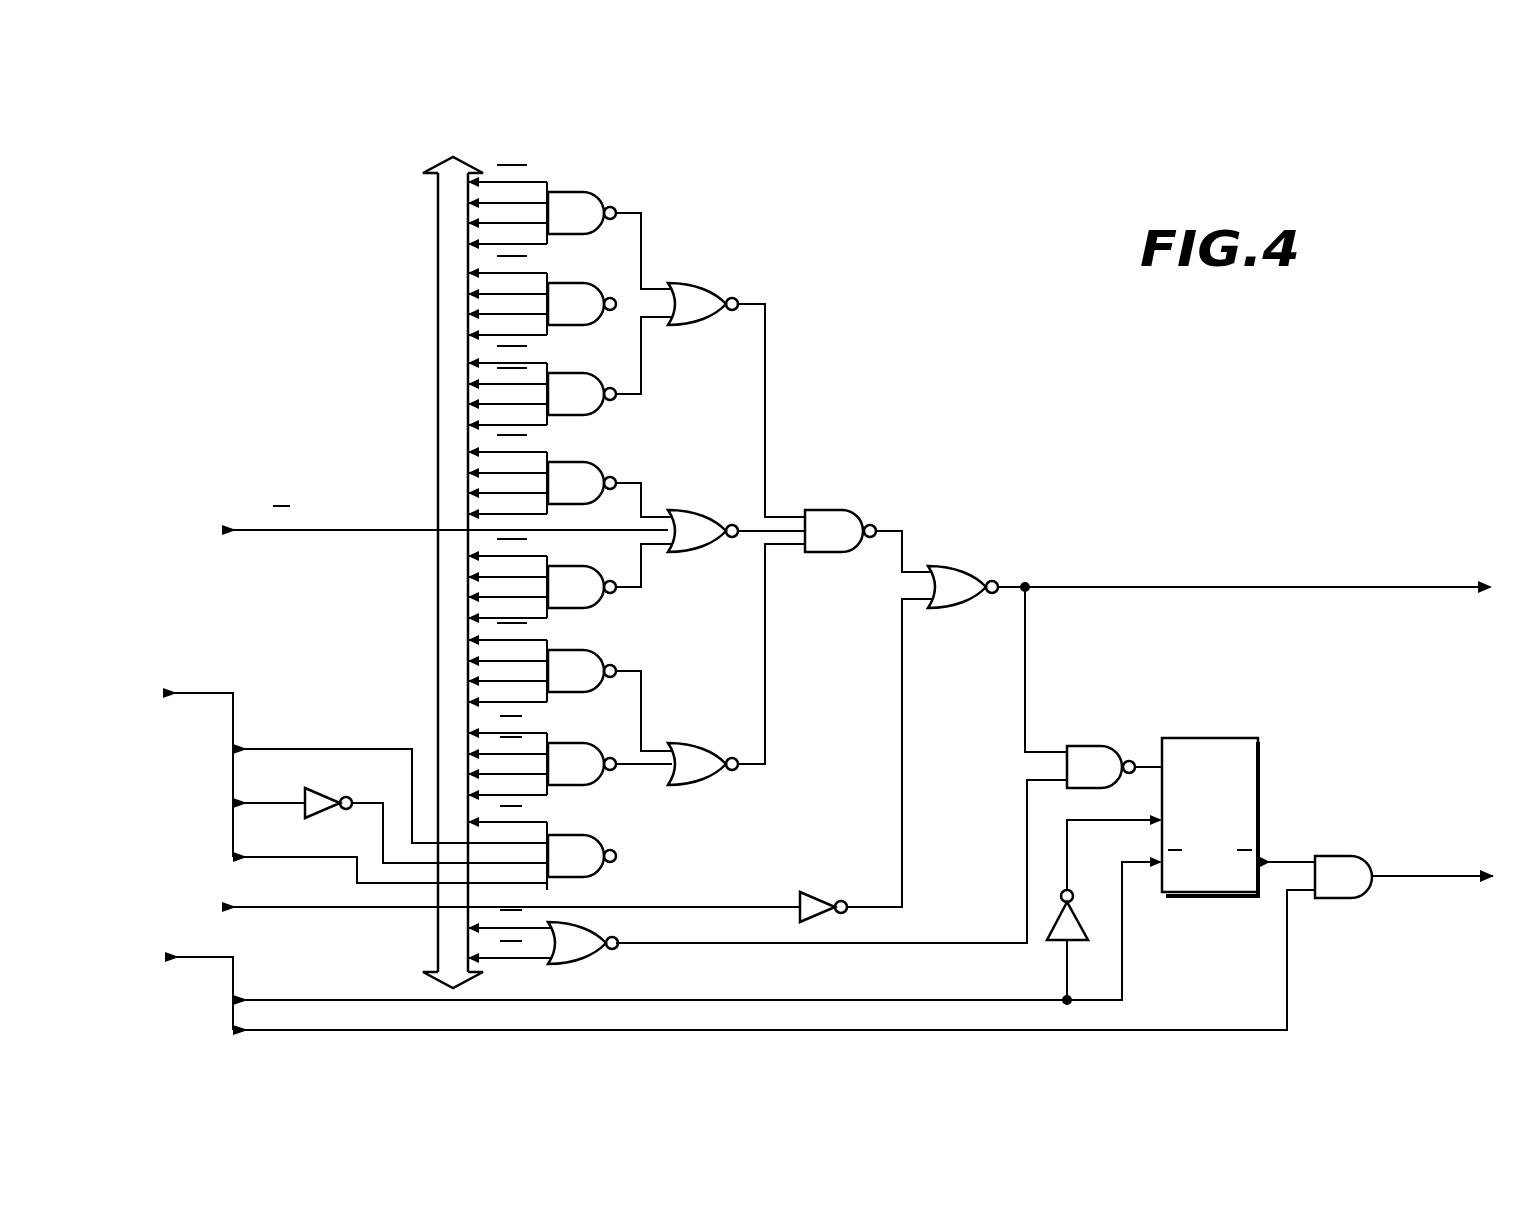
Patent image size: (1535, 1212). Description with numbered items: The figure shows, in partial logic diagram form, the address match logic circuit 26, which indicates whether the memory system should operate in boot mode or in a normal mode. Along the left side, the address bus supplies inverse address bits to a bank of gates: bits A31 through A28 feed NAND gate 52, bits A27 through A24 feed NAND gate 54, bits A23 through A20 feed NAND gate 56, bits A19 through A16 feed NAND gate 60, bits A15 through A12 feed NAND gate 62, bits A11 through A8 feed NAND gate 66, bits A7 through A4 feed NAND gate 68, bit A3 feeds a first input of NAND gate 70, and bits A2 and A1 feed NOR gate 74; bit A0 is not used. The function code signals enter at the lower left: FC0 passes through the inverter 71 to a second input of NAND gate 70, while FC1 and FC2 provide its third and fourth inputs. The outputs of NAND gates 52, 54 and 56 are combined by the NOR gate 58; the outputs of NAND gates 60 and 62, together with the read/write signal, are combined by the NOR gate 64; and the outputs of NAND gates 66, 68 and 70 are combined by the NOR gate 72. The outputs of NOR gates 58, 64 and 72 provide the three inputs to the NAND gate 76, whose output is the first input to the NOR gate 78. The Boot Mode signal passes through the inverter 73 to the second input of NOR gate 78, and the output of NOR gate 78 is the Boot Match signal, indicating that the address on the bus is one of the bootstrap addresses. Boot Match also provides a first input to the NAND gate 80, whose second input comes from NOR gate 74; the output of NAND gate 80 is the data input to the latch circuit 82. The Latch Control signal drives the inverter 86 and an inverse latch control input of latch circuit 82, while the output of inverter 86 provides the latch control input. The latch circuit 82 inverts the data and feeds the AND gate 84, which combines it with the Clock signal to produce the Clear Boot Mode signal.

The address match logic circuit 26 is at (1120, 364).
The NAND gate 52 is at (578, 192).
The NAND gate 54 is at (578, 283).
The NAND gate 56 is at (576, 373).
The NOR gate 58 is at (698, 283).
The NAND gate 60 is at (576, 462).
The NAND gate 62 is at (576, 566).
The NOR gate 64 is at (690, 510).
The NAND gate 66 is at (576, 650).
The NAND gate 68 is at (576, 743).
The NAND gate 70 is at (576, 835).
The inverter 71 is at (328, 795).
The NOR gate 72 is at (695, 743).
The inverter 73 is at (816, 893).
The NOR gate 74 is at (590, 962).
The NAND gate 76 is at (830, 510).
The NOR gate 78 is at (950, 566).
The NAND gate 80 is at (1085, 745).
The latch circuit 82 is at (1223, 885).
The AND gate 84 is at (1346, 900).
The inverter 86 is at (1078, 942).